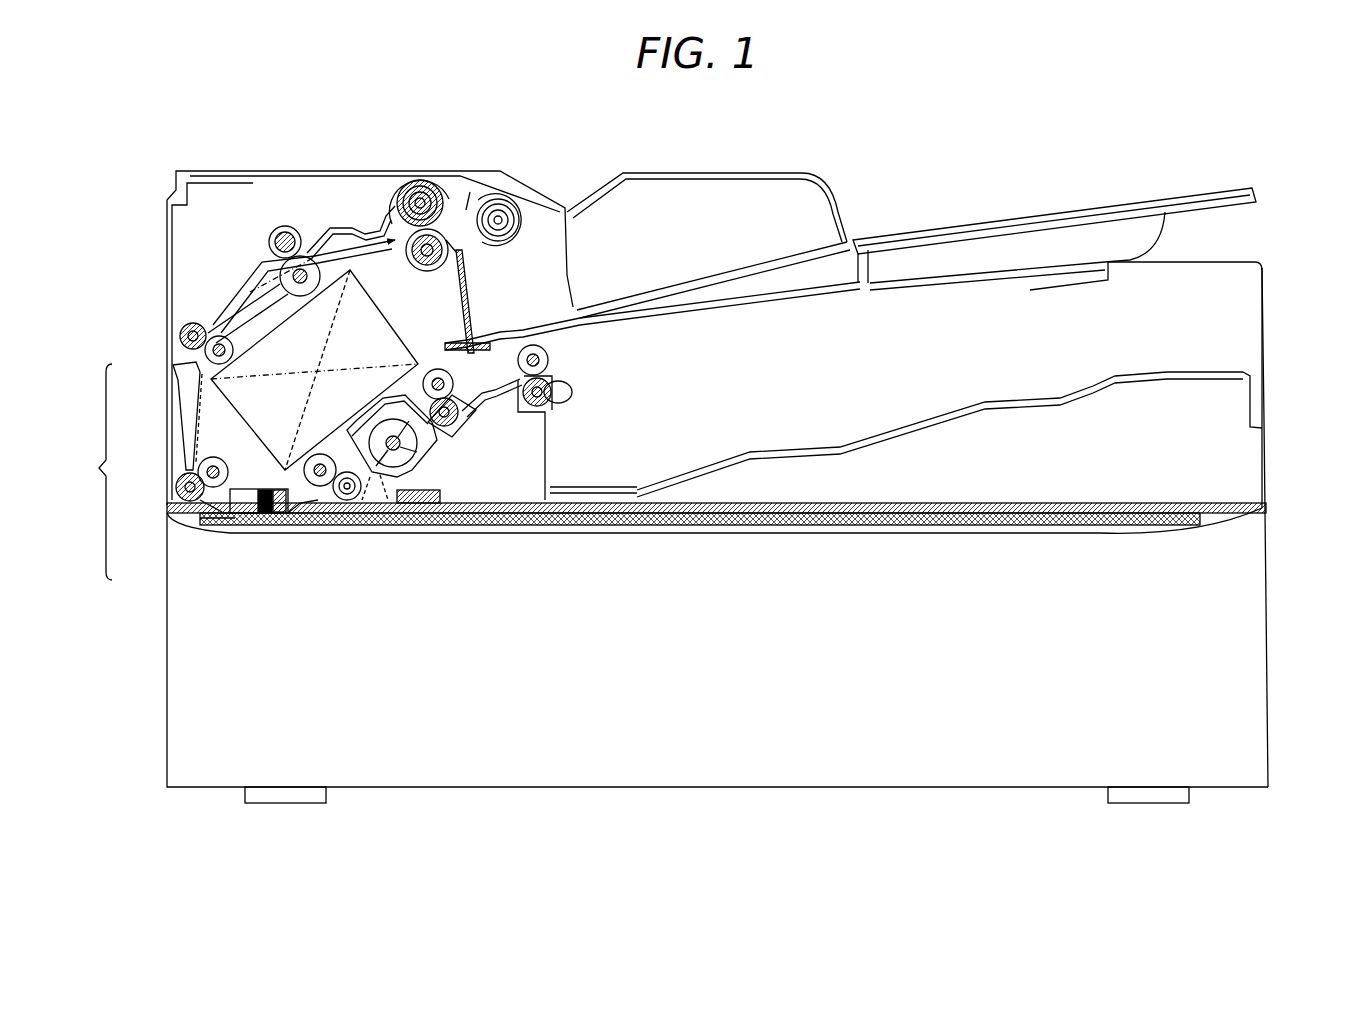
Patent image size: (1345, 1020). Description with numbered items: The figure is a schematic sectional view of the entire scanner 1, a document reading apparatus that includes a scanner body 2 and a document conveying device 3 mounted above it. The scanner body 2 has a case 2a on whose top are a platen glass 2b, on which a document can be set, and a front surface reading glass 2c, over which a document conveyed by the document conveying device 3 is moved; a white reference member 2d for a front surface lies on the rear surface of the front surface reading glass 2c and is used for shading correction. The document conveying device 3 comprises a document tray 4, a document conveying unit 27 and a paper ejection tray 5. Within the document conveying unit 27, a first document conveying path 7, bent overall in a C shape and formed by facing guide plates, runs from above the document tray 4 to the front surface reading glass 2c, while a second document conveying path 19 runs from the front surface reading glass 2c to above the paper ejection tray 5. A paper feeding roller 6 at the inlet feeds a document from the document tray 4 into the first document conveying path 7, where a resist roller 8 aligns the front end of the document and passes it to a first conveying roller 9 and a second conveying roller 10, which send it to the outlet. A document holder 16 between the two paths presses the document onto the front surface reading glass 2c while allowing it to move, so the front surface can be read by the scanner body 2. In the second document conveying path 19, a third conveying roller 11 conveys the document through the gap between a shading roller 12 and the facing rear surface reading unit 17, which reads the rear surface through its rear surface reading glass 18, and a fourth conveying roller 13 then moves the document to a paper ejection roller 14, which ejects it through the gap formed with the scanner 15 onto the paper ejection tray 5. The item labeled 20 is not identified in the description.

The scanner 1 is at (97, 472).
The scanner body 2 is at (160, 578).
The case 2a is at (1254, 651).
The platen glass 2b is at (760, 526).
The front surface reading glass 2c is at (290, 527).
The white reference member for a front surface 2d is at (213, 530).
The document conveying device 3 is at (160, 356).
The document tray 4 is at (886, 228).
The paper ejection tray 5 is at (890, 437).
The paper feeding roller 6 is at (462, 176).
The first document conveying path 7 is at (332, 223).
The resist roller 8 is at (322, 276).
The first conveying roller 9 is at (211, 326).
The second conveying roller 10 is at (232, 530).
The third conveying roller 11 is at (323, 527).
The shading roller 12 is at (390, 527).
The fourth conveying roller 13 is at (436, 368).
The paper ejection roller 14 is at (538, 342).
The scanner 15 is at (562, 399).
The document holder 16 is at (270, 526).
The rear surface reading unit 17 is at (272, 318).
The rear surface reading glass 18 is at (373, 526).
The second document conveying path 19 is at (498, 395).
The bottom frame 20 is at (862, 515).
The document conveying unit 27 is at (382, 166).